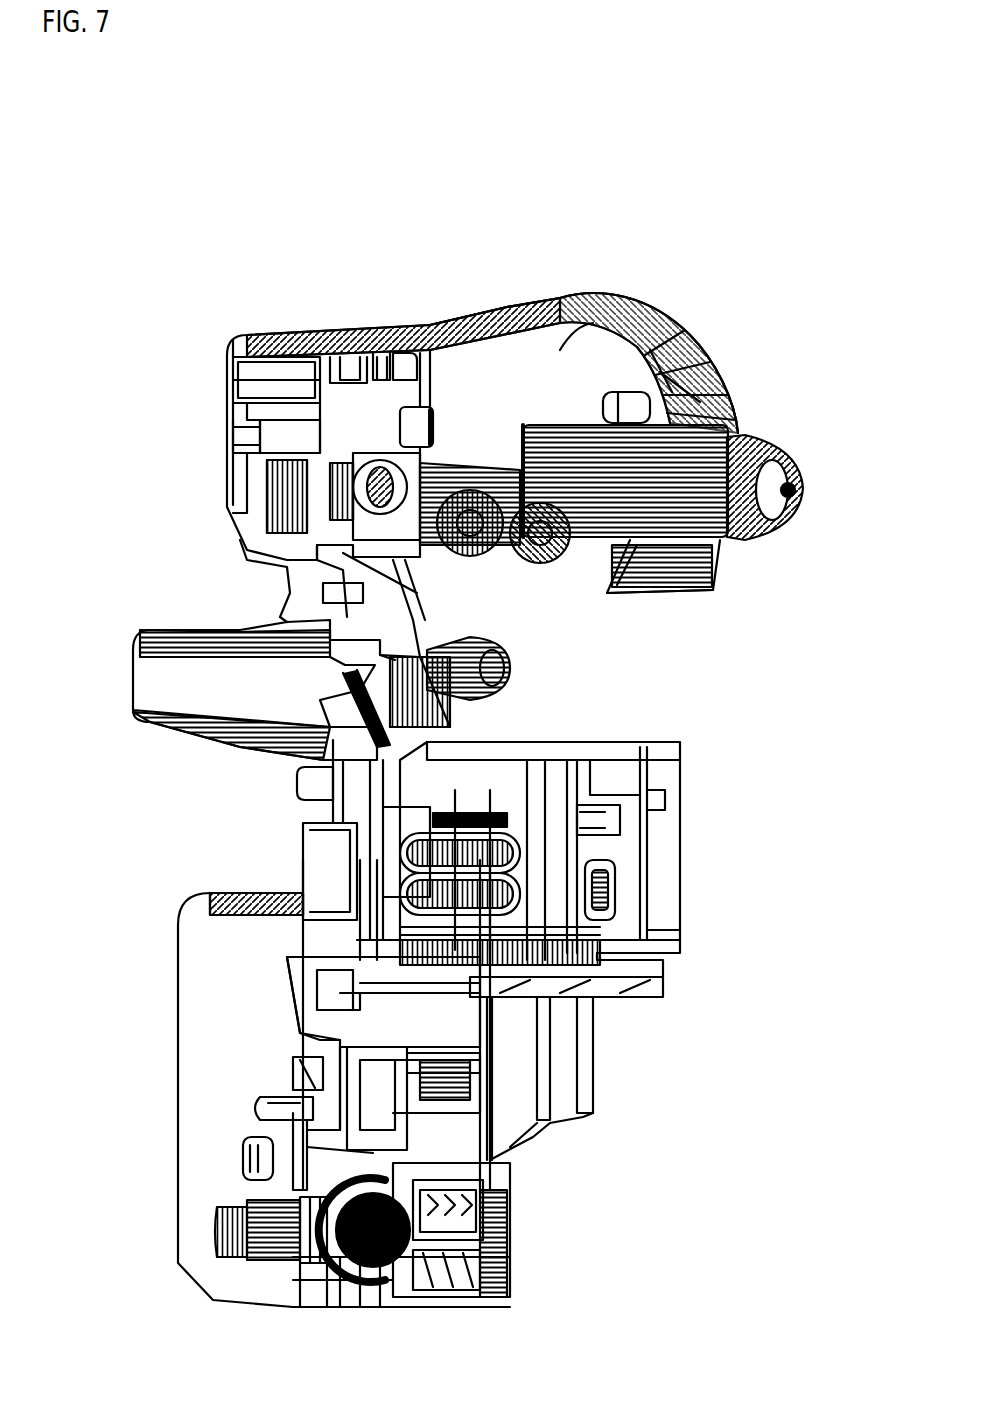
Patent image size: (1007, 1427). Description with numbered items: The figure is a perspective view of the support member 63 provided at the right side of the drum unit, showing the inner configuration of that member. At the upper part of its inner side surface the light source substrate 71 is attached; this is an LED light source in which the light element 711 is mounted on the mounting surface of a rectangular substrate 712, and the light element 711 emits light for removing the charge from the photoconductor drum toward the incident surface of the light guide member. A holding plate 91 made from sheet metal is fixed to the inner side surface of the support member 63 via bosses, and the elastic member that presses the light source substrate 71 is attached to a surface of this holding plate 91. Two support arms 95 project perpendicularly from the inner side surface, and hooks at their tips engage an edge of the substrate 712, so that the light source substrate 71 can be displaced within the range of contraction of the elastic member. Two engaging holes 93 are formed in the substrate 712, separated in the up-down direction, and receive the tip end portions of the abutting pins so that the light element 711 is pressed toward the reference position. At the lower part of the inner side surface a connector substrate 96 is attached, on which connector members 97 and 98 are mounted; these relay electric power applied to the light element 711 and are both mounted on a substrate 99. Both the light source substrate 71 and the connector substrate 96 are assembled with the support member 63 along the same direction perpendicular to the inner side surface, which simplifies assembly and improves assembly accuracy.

The support member 63 is at (225, 262).
The light source substrate 71 is at (452, 385).
The light element 711 is at (323, 387).
The substrate 712 is at (350, 377).
The holding plate 91 is at (560, 360).
The engaging holes 93 is at (370, 370).
The support arms 95 is at (423, 420).
The connector substrate 96 is at (437, 1013).
The connector member 97 is at (307, 993).
The connector member 98 is at (427, 1210).
The substrate 99 is at (447, 1130).